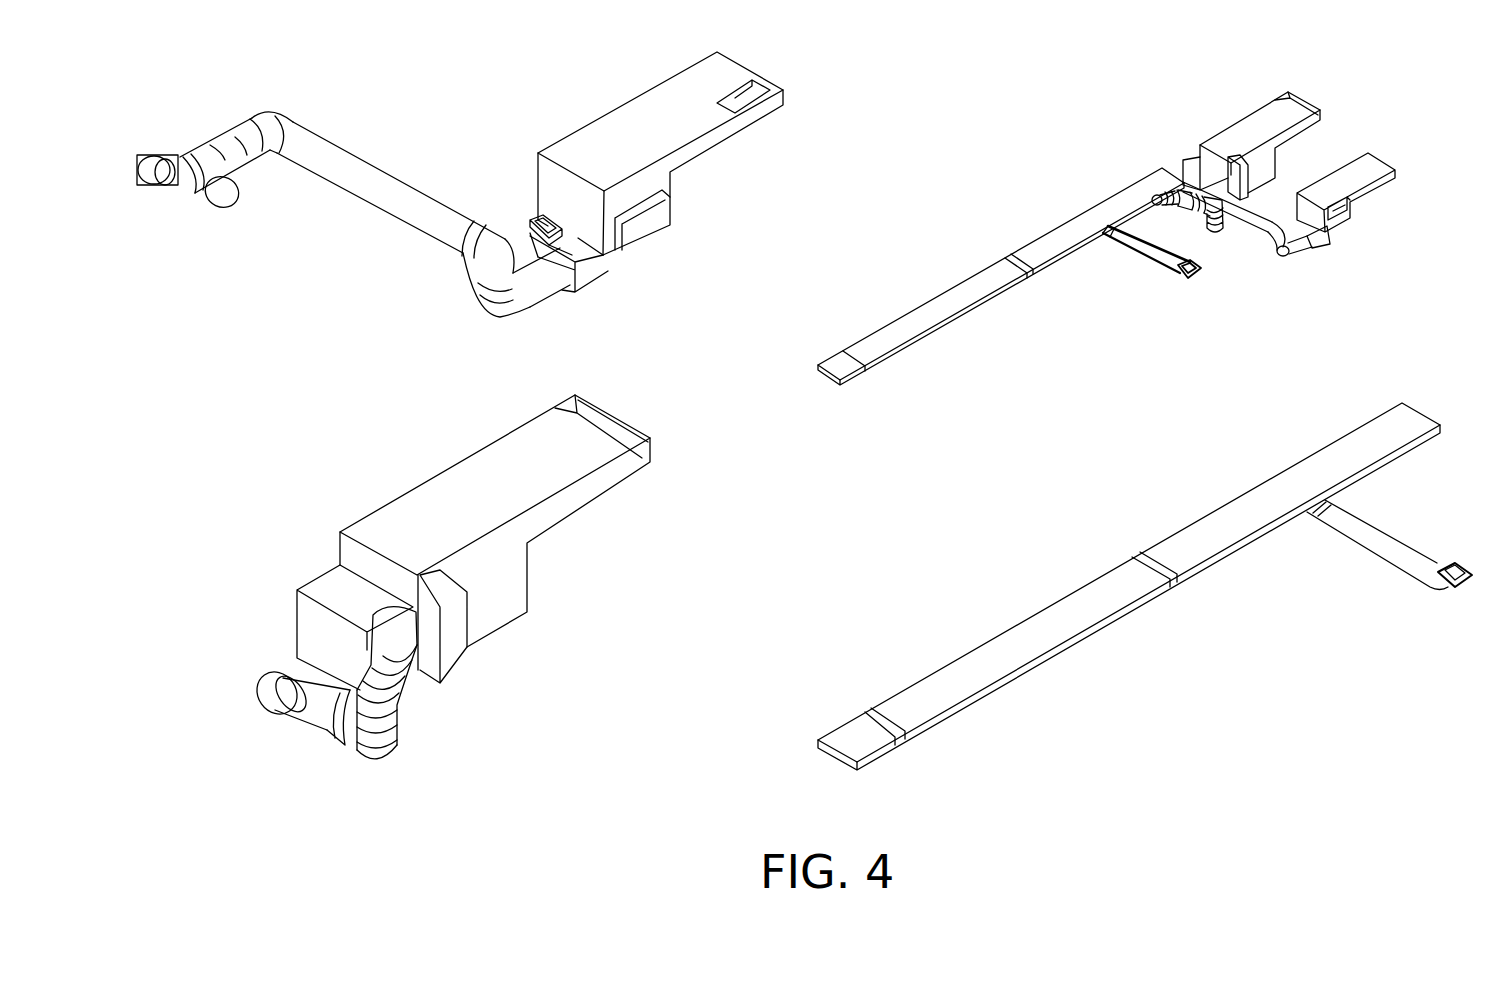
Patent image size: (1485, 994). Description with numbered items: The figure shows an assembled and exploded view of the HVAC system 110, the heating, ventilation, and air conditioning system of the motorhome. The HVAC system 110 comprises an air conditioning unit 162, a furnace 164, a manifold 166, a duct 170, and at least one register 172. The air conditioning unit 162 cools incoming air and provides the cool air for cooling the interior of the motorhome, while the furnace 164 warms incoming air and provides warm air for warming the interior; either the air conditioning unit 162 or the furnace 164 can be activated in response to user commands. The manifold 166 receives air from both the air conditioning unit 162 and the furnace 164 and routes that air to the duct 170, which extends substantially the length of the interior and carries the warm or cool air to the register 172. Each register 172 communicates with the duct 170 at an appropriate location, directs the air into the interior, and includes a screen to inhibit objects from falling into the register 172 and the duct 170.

The HVAC system 110 is at (907, 431).
The air conditioning unit 162 is at (1300, 137).
The furnace 164 is at (593, 267).
The manifold 166 is at (226, 194).
The duct 170 is at (950, 303).
The register 172 is at (1200, 272).